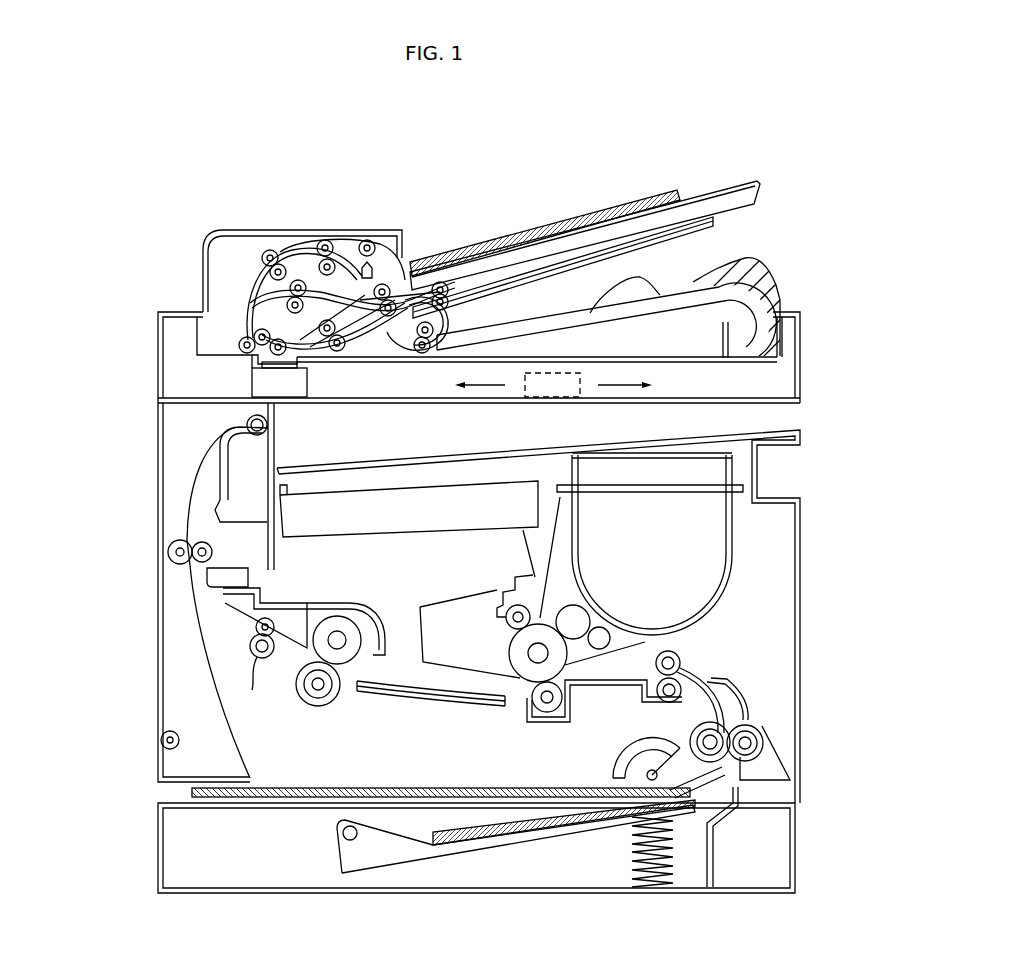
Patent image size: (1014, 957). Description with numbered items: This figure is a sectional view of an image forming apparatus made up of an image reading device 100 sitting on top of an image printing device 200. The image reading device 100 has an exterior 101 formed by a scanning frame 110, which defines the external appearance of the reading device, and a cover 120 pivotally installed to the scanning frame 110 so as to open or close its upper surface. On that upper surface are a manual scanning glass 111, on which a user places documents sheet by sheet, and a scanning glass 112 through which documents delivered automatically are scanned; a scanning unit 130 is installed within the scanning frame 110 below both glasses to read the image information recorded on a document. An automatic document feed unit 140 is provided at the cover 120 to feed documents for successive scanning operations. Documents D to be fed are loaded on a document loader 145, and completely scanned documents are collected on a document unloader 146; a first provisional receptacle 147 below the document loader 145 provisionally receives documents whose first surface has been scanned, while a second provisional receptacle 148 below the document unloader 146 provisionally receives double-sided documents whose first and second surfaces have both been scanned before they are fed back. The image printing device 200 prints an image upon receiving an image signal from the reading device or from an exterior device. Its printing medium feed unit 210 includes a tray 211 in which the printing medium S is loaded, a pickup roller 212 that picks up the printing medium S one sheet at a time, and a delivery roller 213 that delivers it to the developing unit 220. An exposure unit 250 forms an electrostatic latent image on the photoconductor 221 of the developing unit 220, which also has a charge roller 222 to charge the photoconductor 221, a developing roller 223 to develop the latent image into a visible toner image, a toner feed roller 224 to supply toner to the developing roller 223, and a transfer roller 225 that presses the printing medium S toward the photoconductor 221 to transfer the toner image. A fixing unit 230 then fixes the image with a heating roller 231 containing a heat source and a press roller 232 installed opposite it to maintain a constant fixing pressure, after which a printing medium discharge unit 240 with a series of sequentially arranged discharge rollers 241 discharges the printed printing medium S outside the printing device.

The image reading device 100 is at (439, 283).
The exterior 101 is at (414, 316).
The scanning frame 110 is at (157, 340).
The manual scanning glass 111 is at (436, 364).
The scanning glass 112 is at (253, 378).
The cover 120 is at (193, 267).
The scanning unit 130 is at (305, 385).
The automatic document feed unit 140 is at (534, 263).
The document loader 145 is at (700, 192).
The document unloader 146 is at (672, 295).
The first provisional receptacle 147 is at (470, 277).
The second provisional receptacle 148 is at (548, 322).
The document D is at (577, 220).
The image printing device 200 is at (484, 677).
The printing medium feed unit 210 is at (476, 845).
The tray 211 is at (477, 850).
The pickup roller 212 is at (617, 767).
The delivery roller 213 is at (763, 723).
The developing unit 220 is at (645, 601).
The photoconductor 221 is at (512, 655).
The charge roller 222 is at (503, 594).
The developing roller 223 is at (568, 603).
The toner feed roller 224 is at (608, 640).
The transfer roller 225 is at (528, 702).
The fixing unit 230 is at (399, 655).
The heating roller 231 is at (343, 613).
The press roller 232 is at (322, 706).
The printing medium discharge unit 240 is at (200, 596).
The discharge rollers 241 is at (212, 553).
The exposure unit 250 is at (405, 520).
The printing medium S is at (485, 823).